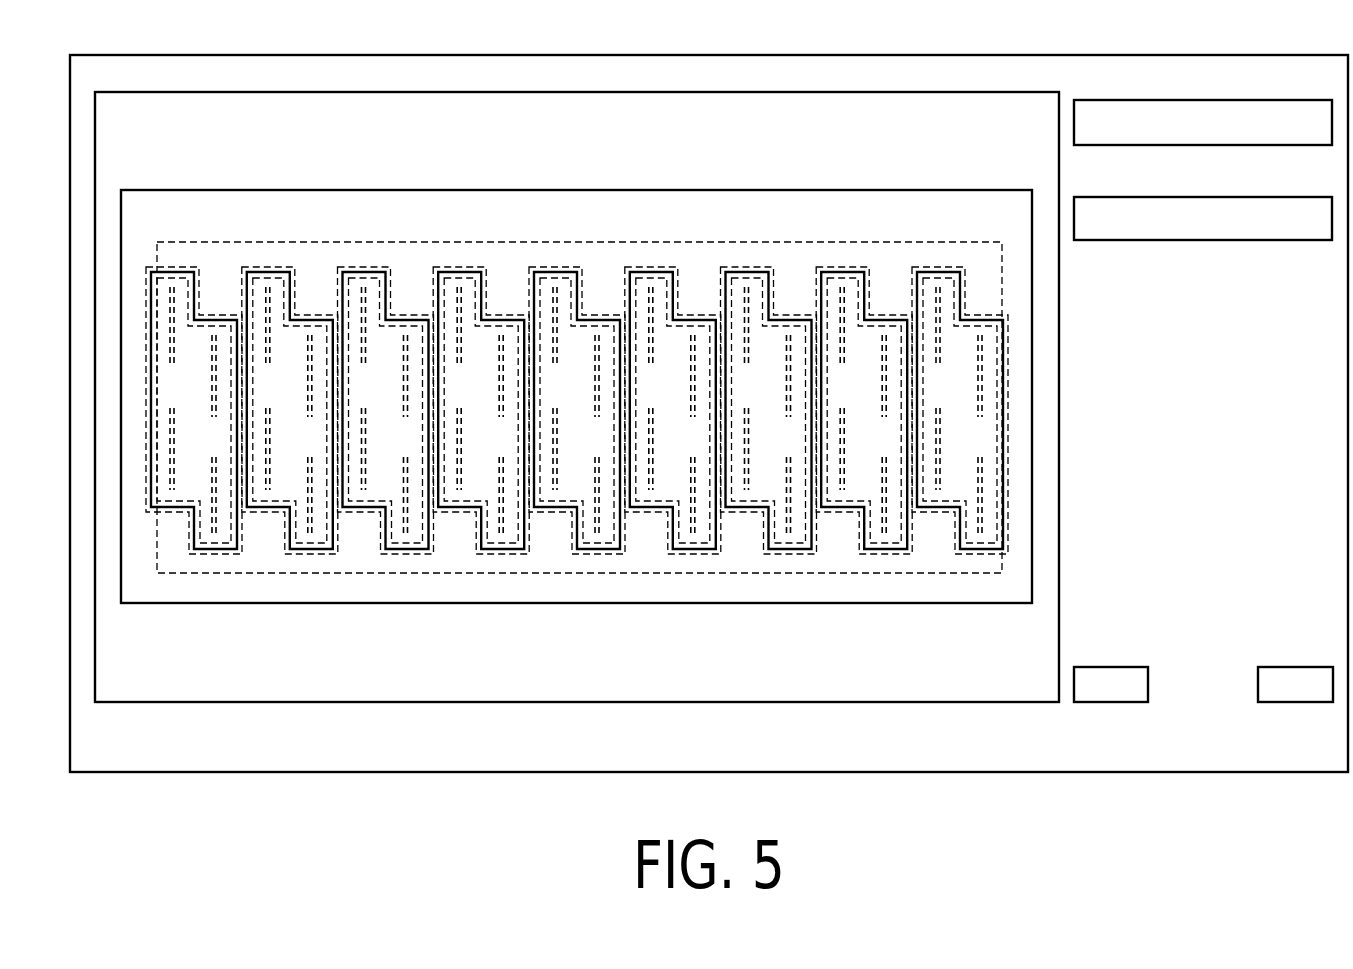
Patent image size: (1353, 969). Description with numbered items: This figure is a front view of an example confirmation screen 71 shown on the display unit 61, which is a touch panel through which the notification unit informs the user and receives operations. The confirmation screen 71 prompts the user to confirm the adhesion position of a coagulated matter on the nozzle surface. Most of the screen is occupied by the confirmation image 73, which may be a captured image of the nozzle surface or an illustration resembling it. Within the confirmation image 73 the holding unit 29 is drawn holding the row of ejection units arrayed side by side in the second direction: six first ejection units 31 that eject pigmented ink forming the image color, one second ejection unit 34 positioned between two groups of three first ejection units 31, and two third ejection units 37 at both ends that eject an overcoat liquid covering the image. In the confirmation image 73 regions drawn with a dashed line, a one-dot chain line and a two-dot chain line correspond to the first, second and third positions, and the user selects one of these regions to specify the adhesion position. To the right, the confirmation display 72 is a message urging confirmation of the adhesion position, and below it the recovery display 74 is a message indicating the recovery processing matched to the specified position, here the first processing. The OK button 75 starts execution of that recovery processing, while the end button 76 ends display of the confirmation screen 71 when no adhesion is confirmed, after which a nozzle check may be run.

The display unit 61 is at (95, 55).
The confirmation image 73 is at (972, 92).
The holding unit 29 is at (139, 190).
The third ejection unit 37 is at (577, 380).
The first ejection unit 31 is at (577, 380).
The second ejection unit 34 is at (577, 380).
The confirmation screen 71 is at (1176, 92).
The confirmation display 72 is at (1264, 100).
The recovery display 74 is at (1264, 197).
The OK button 75 is at (1108, 667).
The end button 76 is at (1291, 667).